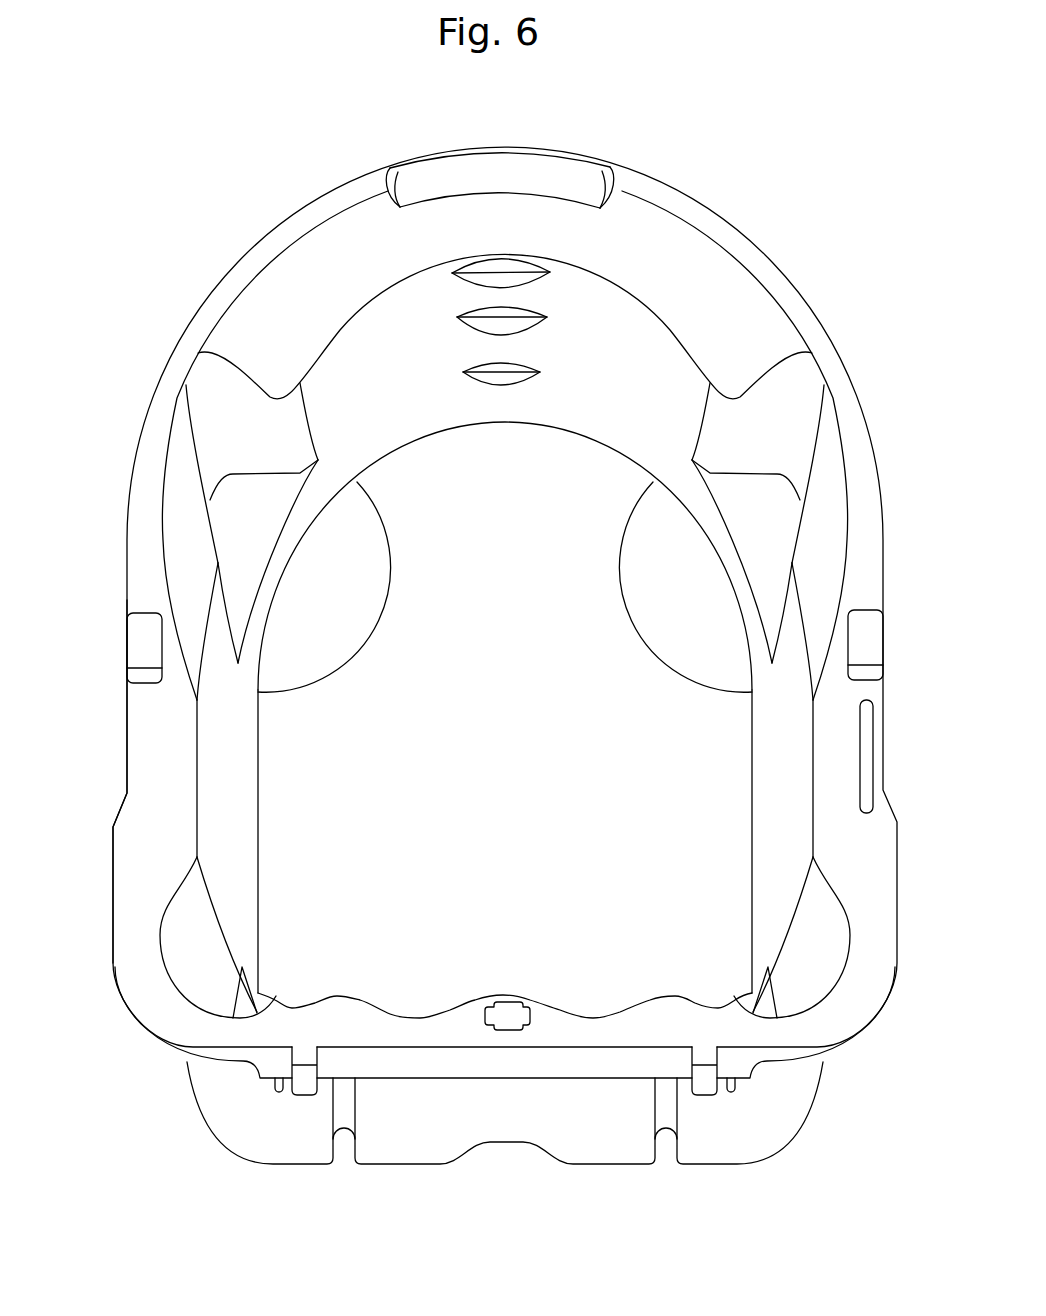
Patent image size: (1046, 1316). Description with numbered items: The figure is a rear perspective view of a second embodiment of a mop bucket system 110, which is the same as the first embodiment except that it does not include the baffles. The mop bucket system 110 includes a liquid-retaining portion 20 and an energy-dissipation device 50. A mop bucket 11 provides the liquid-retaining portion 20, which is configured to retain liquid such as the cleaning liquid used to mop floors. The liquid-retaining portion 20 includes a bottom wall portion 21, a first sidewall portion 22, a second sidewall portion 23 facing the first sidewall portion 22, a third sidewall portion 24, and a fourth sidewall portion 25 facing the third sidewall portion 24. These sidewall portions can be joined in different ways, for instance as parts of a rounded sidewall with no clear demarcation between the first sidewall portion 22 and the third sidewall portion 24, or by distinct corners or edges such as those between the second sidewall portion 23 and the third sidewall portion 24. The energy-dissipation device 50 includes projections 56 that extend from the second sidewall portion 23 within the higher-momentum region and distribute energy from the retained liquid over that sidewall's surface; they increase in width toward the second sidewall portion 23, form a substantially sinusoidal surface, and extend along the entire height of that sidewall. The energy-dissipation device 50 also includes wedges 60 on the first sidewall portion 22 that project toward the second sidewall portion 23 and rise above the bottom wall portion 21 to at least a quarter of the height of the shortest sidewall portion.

The mop bucket system 110 is at (676, 134).
The mop bucket 11 is at (777, 282).
The liquid-retaining portion 20 is at (787, 304).
The bottom wall portion 21 is at (530, 777).
The first sidewall portion 22 is at (537, 150).
The second sidewall portion 23 is at (360, 1030).
The third sidewall portion 24 is at (867, 581).
The fourth sidewall portion 25 is at (140, 726).
The energy-dissipation device 50 is at (452, 273).
The projections 56 is at (360, 1000).
The wedges 60 is at (550, 273).